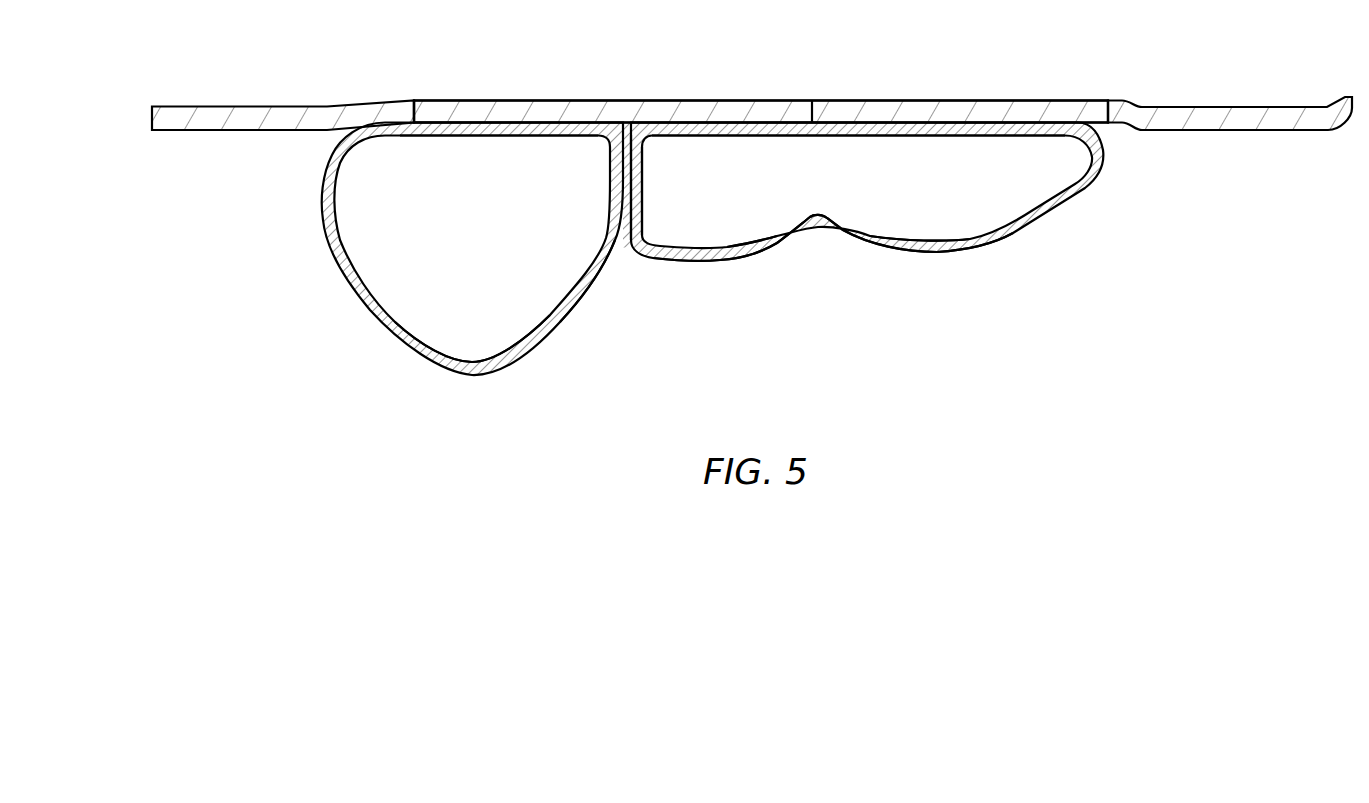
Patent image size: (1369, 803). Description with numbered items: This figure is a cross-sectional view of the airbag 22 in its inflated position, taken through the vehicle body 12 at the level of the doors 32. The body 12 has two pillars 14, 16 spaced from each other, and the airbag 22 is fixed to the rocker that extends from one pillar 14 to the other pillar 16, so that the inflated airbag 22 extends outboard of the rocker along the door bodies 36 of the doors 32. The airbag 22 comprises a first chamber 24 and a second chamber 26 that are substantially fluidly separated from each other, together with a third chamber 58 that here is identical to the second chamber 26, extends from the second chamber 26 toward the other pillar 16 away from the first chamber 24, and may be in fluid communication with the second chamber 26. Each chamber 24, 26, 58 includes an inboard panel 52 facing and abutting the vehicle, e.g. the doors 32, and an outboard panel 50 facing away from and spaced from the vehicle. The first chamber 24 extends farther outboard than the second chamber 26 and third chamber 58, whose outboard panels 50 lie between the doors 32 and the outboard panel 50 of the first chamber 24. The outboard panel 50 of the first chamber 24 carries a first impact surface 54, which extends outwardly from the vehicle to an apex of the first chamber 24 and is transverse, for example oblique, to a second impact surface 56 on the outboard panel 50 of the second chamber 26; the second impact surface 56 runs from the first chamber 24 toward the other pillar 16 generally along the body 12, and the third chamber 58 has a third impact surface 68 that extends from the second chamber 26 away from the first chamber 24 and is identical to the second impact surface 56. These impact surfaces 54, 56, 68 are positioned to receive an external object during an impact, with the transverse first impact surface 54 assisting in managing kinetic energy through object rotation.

The body 12 is at (186, 130).
The pillar 14 is at (414, 101).
The pillar 16 is at (1116, 101).
The airbag 22 is at (1060, 222).
The first chamber 24 is at (358, 243).
The second chamber 26 is at (668, 238).
The door 32 is at (742, 100).
The door body 36 is at (576, 101).
The outboard panel 50 is at (465, 357).
The inboard panel 52 is at (468, 137).
The first impact surface 54 is at (596, 300).
The second impact surface 56 is at (710, 262).
The third chamber 58 is at (867, 226).
The third impact surface 68 is at (928, 253).